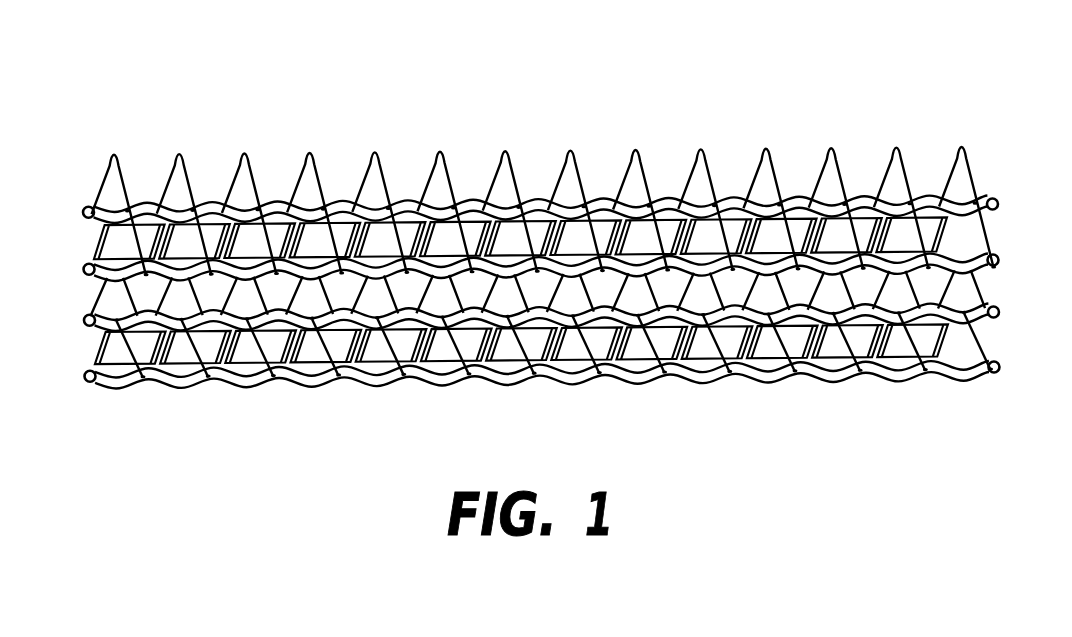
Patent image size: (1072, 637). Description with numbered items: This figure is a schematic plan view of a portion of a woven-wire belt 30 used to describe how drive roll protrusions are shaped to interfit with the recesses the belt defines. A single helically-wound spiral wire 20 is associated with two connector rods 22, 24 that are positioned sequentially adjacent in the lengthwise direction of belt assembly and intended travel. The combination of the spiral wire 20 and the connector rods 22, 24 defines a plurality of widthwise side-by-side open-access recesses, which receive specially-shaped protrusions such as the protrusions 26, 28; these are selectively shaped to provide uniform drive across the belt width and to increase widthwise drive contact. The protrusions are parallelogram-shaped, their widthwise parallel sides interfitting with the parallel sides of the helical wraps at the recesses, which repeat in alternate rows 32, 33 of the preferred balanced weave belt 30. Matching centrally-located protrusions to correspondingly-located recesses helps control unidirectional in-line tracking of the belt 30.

The woven-wire belt 30 is at (543, 249).
The helically-wound spiral wire 20 is at (981, 362).
The connector rod 22 is at (980, 294).
The connector rod 24 is at (960, 388).
The shaped protrusion 26 is at (828, 365).
The shaped protrusion 28 is at (898, 362).
The row of open-access recesses 32 is at (84, 230).
The row of open-access recesses 33 is at (495, 391).